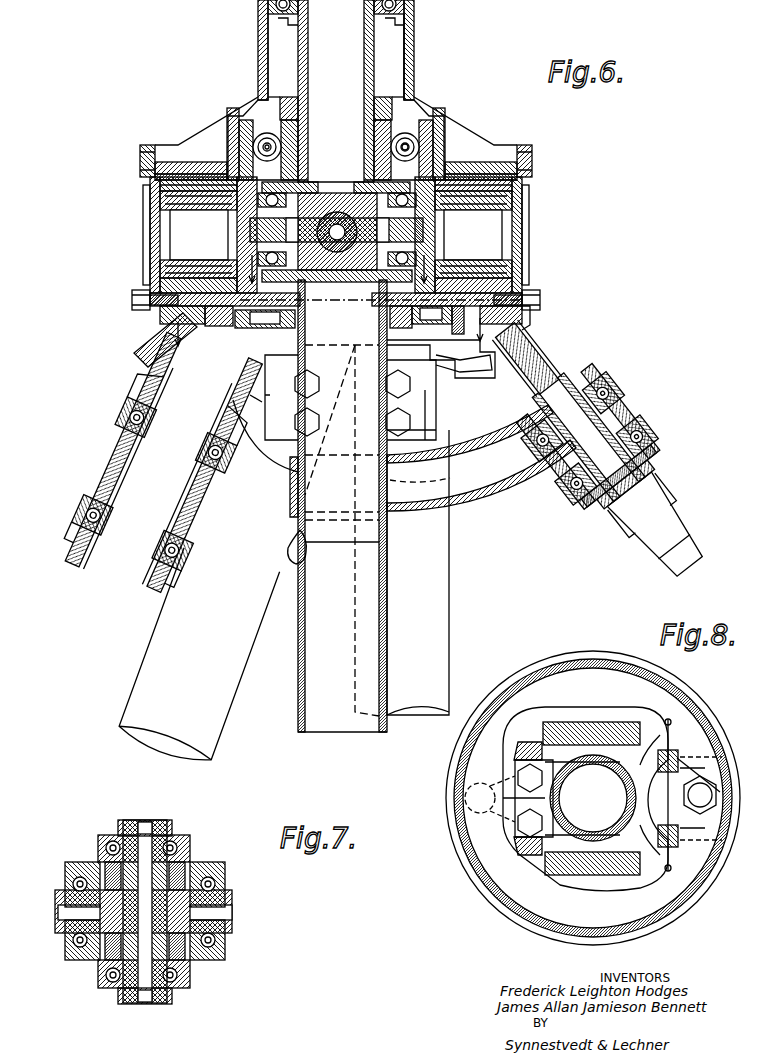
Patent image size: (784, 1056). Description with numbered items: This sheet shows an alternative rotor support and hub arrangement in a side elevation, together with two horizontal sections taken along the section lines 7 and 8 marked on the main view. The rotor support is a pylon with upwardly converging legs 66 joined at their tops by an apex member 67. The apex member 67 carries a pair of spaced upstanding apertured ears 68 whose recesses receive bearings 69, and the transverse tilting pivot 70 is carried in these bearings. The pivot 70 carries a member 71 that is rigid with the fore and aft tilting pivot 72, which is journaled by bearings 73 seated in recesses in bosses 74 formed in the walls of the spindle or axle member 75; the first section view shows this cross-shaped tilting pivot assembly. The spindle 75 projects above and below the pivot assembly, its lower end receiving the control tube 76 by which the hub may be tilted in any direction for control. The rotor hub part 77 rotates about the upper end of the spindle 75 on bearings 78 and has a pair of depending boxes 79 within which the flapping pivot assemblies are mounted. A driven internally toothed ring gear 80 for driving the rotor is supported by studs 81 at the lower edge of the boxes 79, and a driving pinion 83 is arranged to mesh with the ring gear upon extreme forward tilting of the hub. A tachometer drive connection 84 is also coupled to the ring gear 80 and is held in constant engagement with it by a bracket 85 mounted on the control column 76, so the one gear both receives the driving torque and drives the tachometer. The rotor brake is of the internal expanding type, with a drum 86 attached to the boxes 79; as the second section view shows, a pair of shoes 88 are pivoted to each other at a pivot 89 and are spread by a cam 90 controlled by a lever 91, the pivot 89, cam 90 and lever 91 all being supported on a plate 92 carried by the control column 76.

In FIG. 6, the legs 66 is at (450, 612).
In FIG. 6, the apex member 67 is at (270, 445).
In FIG. 6, the ears 68 is at (387, 338).
In FIG. 8, the ears 68 is at (600, 722).
In FIG. 7, the ears 68 is at (190, 848).
In FIG. 7, the bearings 69 is at (170, 835).
In FIG. 6, the transverse tilting pivot 70 is at (346, 195).
In FIG. 7, the transverse tilting pivot 70 is at (143, 1003).
In FIG. 6, the member 71 is at (358, 182).
In FIG. 7, the member 71 is at (180, 945).
In FIG. 7, the fore and aft tilting pivot 72 is at (232, 908).
In FIG. 6, the bearings 73 is at (240, 178).
In FIG. 7, the bearings 73 is at (78, 884).
In FIG. 6, the bosses 74 is at (282, 283).
In FIG. 7, the bosses 74 is at (88, 866).
In FIG. 6, the spindle or axle member 75 is at (373, 62).
In FIG. 8, the spindle or axle member 75 is at (566, 772).
In FIG. 6, the control tube 76 is at (298, 625).
In FIG. 6, the rotor hub part 77 is at (413, 82).
In FIG. 6, the bearings 78 is at (418, 6).
In FIG. 6, the depending boxes 79 is at (188, 160).
In FIG. 6, the ring gear 80 is at (148, 345).
In FIG. 6, the studs 81 is at (147, 302).
In FIG. 6, the driving pinion 83 is at (160, 377).
In FIG. 6, the tachometer drive connection 84 is at (562, 388).
In FIG. 6, the bracket 85 is at (485, 490).
In FIG. 6, the drum 86 is at (528, 325).
In FIG. 8, the shoes 88 is at (575, 682).
In FIG. 8, the pivot 89 is at (475, 798).
In FIG. 6, the cam 90 is at (522, 283).
In FIG. 8, the cam 90 is at (728, 790).
In FIG. 6, the lever 91 is at (488, 360).
In FIG. 6, the plate 92 is at (376, 318).
In FIG. 8, the plate 92 is at (690, 882).
In FIG. 6, the section line 7— 7 is at (337, 269).
In FIG. 6, the section line 8— 8 is at (335, 335).